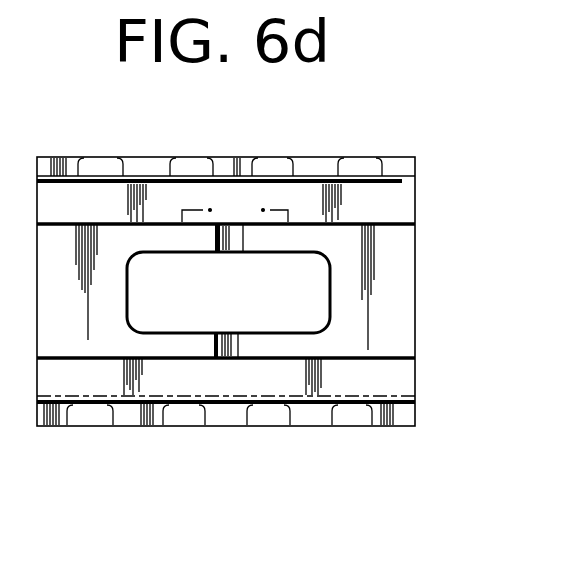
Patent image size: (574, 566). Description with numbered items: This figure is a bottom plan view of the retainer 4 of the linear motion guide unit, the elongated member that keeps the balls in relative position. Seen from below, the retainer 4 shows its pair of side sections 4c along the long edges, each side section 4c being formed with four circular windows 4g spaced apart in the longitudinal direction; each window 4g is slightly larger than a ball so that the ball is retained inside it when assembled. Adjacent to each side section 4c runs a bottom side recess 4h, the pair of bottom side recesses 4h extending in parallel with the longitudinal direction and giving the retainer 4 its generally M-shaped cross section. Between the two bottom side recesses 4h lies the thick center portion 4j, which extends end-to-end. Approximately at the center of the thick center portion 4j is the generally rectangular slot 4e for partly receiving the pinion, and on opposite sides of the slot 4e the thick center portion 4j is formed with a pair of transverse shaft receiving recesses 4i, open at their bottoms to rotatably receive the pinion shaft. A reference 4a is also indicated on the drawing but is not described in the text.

The retainer 4 is at (415, 245).
The bottom plate 4a is at (400, 402).
The side section 4c is at (49, 157).
The slot 4e is at (323, 312).
The window 4g is at (380, 172).
The bottom side recess 4h is at (118, 200).
The shaft receiving recess 4i is at (241, 239).
The thick center portion 4j is at (392, 283).